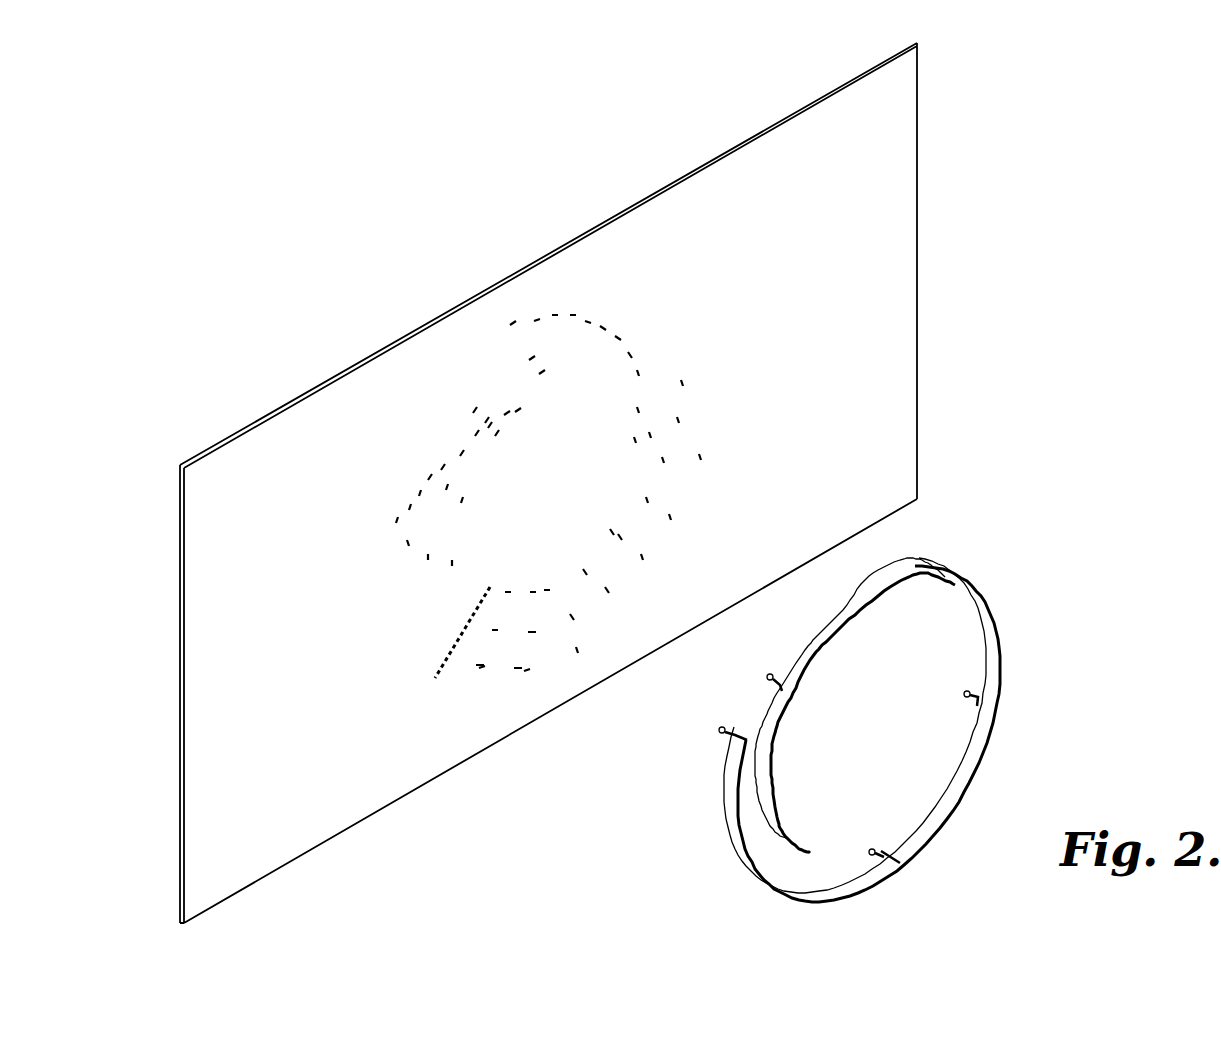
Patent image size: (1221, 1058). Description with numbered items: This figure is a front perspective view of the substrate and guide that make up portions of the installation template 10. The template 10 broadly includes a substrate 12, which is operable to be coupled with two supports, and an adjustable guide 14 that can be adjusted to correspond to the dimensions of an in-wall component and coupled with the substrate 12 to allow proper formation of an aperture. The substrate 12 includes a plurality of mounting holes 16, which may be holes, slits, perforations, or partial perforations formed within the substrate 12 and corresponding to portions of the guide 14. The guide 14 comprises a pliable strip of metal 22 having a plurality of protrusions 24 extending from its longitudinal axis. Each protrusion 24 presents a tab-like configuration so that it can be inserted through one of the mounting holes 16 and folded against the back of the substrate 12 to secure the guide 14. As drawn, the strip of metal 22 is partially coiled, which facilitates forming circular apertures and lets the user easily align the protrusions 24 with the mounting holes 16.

The template 10 is at (991, 410).
The substrate 12 is at (891, 201).
The adjustable guide 14 is at (996, 651).
The mounting holes 16 is at (668, 291).
The strip of metal 22 is at (970, 763).
The protrusions 24 is at (720, 728).